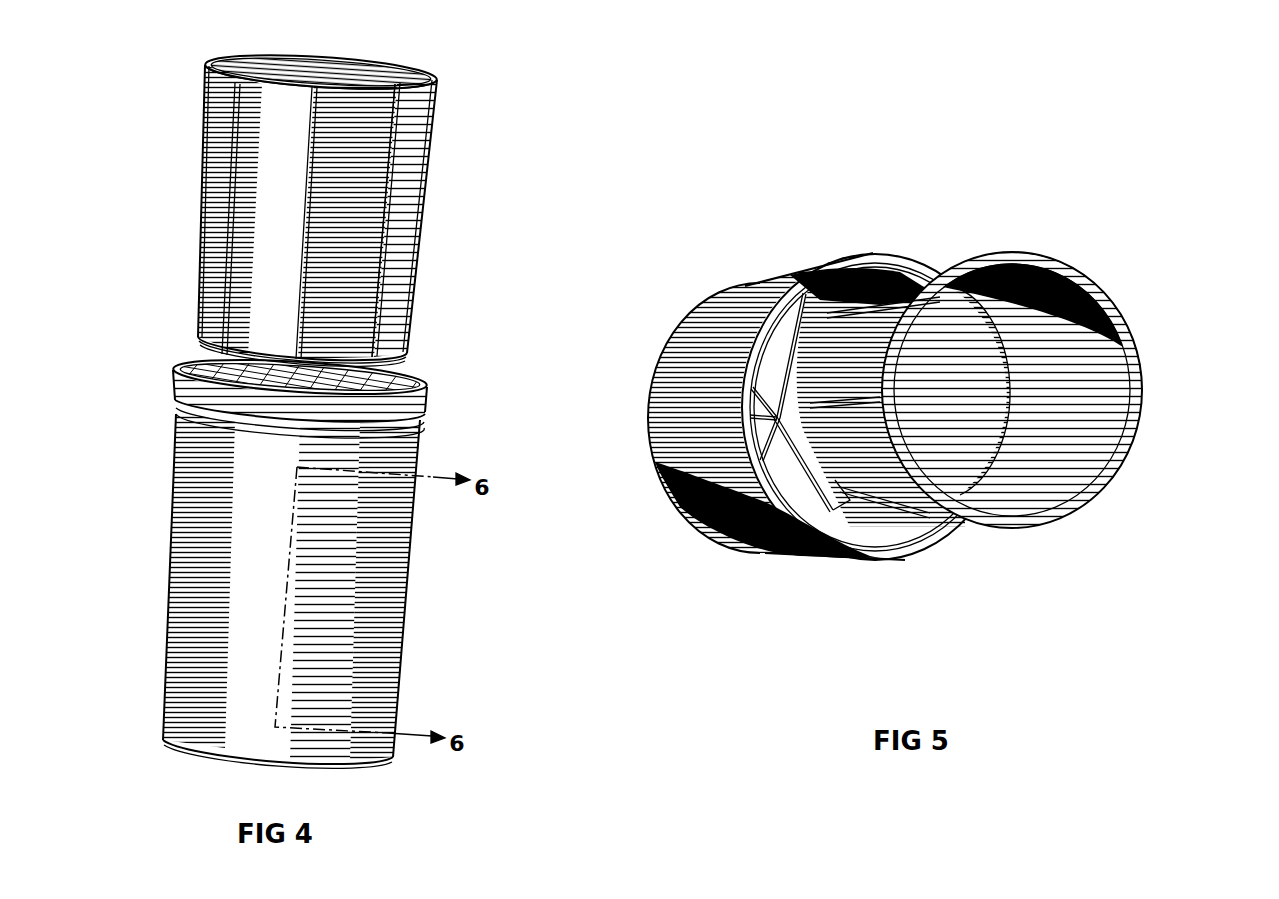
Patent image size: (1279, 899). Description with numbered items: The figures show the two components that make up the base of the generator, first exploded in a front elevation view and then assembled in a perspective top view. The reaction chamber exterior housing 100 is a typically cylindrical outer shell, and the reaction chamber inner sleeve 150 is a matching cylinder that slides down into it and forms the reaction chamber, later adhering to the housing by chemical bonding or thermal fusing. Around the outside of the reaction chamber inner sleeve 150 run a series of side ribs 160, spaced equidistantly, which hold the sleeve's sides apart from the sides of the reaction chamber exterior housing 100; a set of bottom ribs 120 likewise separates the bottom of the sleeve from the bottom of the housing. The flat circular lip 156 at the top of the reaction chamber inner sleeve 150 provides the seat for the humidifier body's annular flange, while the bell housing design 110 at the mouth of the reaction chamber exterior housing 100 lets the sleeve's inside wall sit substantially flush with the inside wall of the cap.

In FIG. 4, the reaction chamber exterior housing 100 is at (230, 580).
In FIG. 5, the reaction chamber exterior housing 100 is at (727, 462).
In FIG. 4, the bell housing design 110 is at (422, 403).
In FIG. 5, the bottom ribs 120 is at (827, 505).
In FIG. 4, the reaction chamber inner sleeve 150 is at (273, 230).
In FIG. 5, the reaction chamber inner sleeve 150 is at (970, 420).
In FIG. 4, the lip 156 is at (437, 83).
In FIG. 5, the lip 156 is at (1090, 293).
In FIG. 4, the side ribs 160 is at (383, 263).
In FIG. 5, the side ribs 160 is at (887, 300).